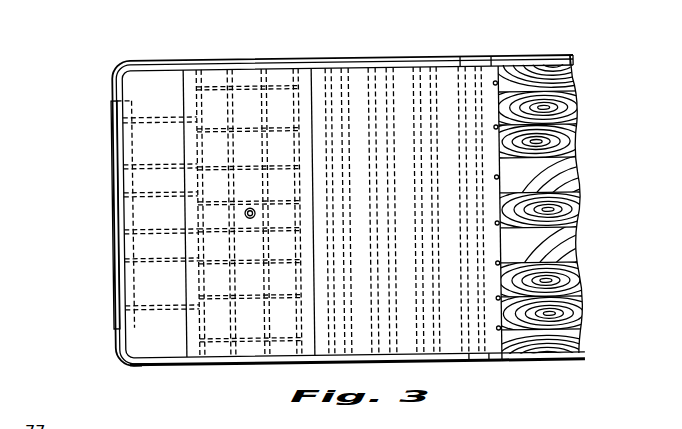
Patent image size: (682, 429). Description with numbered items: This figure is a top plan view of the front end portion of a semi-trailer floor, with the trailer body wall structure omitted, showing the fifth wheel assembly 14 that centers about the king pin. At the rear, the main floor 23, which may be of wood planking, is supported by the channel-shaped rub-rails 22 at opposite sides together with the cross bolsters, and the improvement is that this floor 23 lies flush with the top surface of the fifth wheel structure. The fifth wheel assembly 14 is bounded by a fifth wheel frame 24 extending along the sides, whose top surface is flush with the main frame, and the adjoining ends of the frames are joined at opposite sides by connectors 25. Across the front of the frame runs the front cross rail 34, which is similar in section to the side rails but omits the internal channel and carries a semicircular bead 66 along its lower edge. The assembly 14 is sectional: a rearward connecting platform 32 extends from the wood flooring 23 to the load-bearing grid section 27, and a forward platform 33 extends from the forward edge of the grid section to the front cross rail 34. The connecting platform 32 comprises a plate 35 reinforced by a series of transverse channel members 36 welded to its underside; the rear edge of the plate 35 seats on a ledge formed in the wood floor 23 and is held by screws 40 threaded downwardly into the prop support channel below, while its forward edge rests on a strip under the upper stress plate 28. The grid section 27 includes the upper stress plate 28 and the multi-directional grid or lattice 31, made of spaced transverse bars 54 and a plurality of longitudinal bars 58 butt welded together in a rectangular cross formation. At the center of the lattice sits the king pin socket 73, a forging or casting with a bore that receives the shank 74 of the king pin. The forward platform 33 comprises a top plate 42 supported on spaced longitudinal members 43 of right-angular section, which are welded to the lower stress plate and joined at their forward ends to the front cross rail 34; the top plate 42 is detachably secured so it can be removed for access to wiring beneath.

The fifth wheel assembly 14 is at (104, 216).
The rub-rail 22 is at (560, 360).
The floor 23 is at (555, 181).
The fifth wheel frame 24 is at (218, 363).
The connector 25 is at (482, 56).
The load-bearing grid section 27 is at (254, 97).
The upper stress plate 28 is at (216, 72).
The grid or lattice 31 is at (263, 334).
The rearward connecting platform 32 is at (408, 90).
The forward platform 33 is at (152, 78).
The front cross rail 34 is at (118, 287).
The plate 35 is at (450, 335).
The transverse channel member 36 is at (350, 88).
The screw 40 is at (520, 236).
The top plate 42 is at (150, 326).
The longitudinal member 43 is at (171, 160).
The transverse rib or bar 54 is at (295, 160).
The longitudinal bar or rib 58 is at (226, 292).
The semicircular bead 66 is at (118, 250).
The king pin socket 73 is at (247, 206).
The shank 74 is at (262, 213).